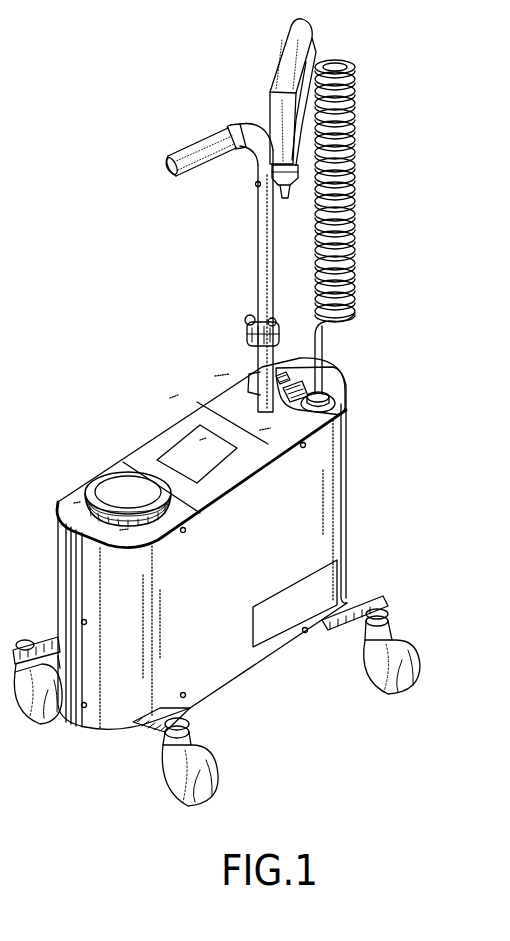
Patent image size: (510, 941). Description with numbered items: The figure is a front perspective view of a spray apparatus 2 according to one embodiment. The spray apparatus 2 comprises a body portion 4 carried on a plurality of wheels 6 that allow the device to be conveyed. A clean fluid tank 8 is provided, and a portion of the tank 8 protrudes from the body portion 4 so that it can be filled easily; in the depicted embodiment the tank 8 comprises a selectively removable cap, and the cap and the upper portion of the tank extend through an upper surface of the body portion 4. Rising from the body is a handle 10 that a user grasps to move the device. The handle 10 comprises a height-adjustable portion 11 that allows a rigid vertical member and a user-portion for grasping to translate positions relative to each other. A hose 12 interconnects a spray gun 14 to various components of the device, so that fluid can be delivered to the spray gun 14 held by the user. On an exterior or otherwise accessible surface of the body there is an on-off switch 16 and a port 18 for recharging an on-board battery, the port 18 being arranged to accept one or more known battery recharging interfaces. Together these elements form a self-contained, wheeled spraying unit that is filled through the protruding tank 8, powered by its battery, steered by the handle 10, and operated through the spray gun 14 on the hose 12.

The spray apparatus 2 is at (125, 354).
The body portion 4 is at (182, 643).
The wheels 6 is at (197, 770).
The clean fluid tank 8 is at (112, 492).
The handle 10 is at (257, 217).
The height-adjustable portion 11 is at (245, 320).
The hose 12 is at (357, 173).
The spray gun 14 is at (274, 90).
The on-off switch 16 is at (274, 378).
The port 18 is at (330, 392).